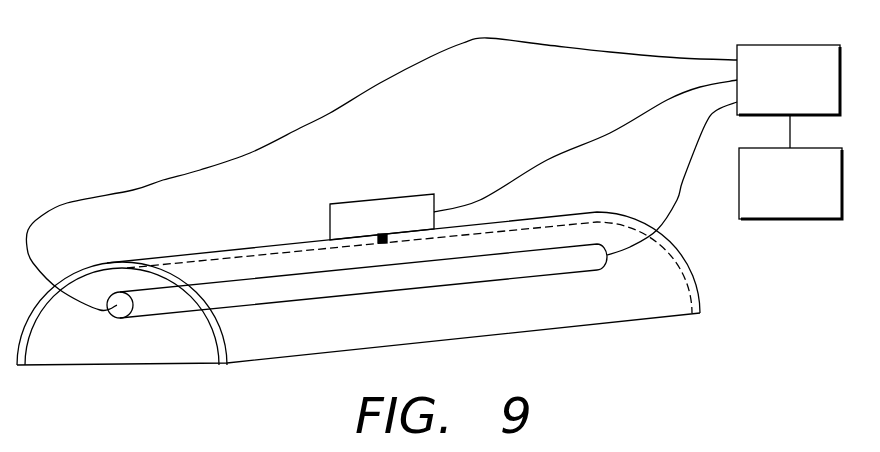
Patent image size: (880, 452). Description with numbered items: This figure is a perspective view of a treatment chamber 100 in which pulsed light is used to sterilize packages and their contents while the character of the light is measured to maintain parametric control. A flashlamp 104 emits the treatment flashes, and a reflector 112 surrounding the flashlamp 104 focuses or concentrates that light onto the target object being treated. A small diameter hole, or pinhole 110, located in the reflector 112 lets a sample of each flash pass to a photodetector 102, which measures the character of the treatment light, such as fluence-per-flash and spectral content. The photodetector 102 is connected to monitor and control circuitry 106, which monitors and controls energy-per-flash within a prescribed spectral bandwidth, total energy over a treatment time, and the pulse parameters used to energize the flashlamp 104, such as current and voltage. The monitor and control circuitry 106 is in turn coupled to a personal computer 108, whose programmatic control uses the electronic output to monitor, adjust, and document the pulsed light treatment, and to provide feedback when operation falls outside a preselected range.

The treatment chamber 100 is at (593, 190).
The photodetector 102 is at (383, 195).
The flashlamp 104 is at (153, 317).
The monitor and control circuitry 106 is at (773, 45).
The personal computer 108 is at (780, 220).
The pinhole 110 is at (385, 243).
The reflector 112 is at (703, 307).